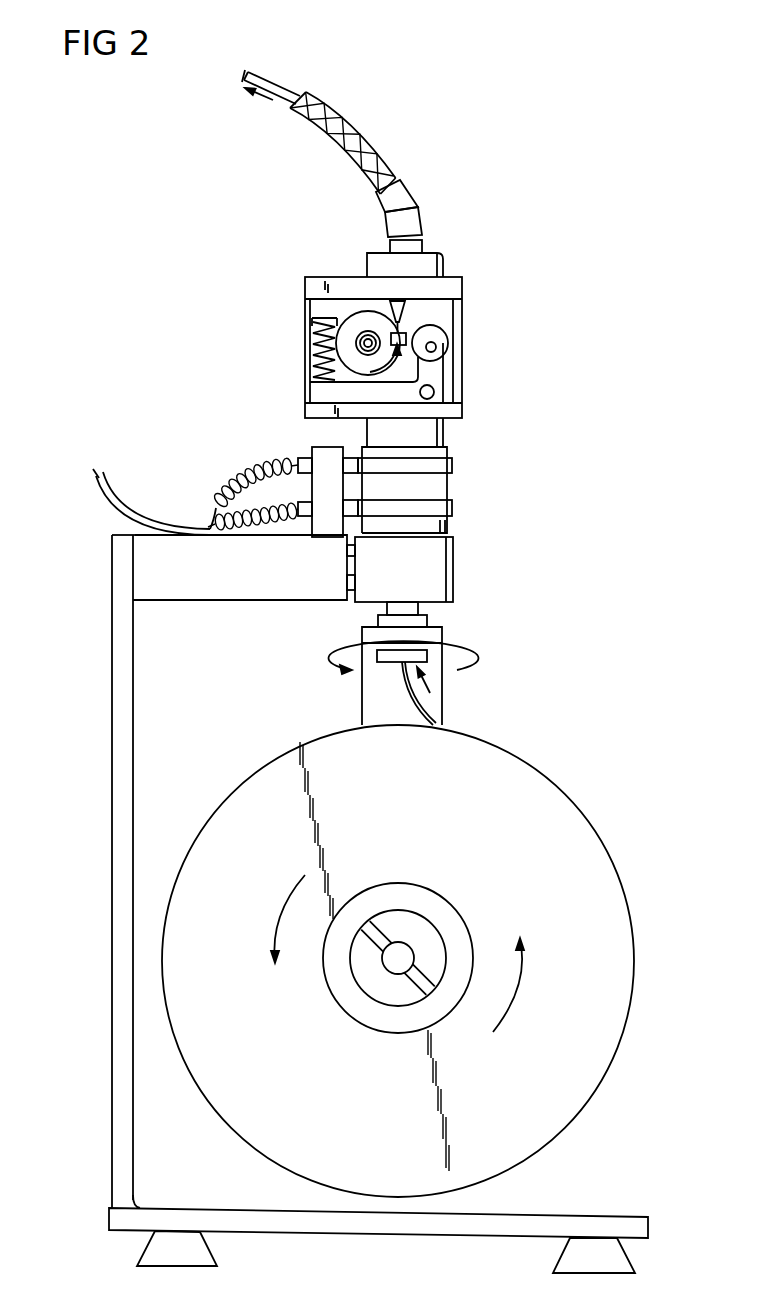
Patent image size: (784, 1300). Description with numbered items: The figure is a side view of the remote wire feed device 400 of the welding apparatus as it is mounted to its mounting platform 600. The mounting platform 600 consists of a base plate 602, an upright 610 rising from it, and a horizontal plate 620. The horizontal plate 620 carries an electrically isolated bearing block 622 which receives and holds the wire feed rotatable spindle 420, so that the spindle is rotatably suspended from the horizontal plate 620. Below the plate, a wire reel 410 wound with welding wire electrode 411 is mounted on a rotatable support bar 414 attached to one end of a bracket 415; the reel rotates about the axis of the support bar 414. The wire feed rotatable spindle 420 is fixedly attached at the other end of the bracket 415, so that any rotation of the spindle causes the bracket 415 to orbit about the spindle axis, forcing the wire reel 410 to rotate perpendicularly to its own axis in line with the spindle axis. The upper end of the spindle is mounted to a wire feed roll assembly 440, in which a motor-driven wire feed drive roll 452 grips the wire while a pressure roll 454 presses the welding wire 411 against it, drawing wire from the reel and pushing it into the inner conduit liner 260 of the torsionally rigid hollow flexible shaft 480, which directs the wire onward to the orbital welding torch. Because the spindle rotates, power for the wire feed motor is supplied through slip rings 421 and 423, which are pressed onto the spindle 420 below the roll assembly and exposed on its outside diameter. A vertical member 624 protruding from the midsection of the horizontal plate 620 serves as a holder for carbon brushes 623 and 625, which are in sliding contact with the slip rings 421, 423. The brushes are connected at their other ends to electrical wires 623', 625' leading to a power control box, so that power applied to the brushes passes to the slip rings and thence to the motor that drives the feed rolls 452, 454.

The inner conduit liner 260 is at (302, 100).
The remote wire feed device unit 400 is at (586, 494).
The wire reel 410 is at (580, 800).
The welding wire electrode 411 is at (262, 82).
The rotatable support bar 414 is at (428, 920).
The bracket 415 is at (378, 693).
The wire feed rotatable spindle 420 is at (418, 607).
The slip ring 421 is at (452, 512).
The slip ring 423 is at (452, 463).
The wire feed roll assembly 440 is at (468, 373).
The wire feed drive roll 452 is at (342, 320).
The pressure roll 454 is at (445, 325).
The torsionally rigid hollow flexible shaft 480 is at (384, 160).
The mounting platform 600 is at (106, 984).
The base plate 602 is at (400, 1232).
The upright 610 is at (120, 827).
The horizontal plate 620 is at (230, 598).
The electrically isolated bearing block 622 is at (455, 575).
The carbon brush 623 is at (291, 536).
The electrical wire 623' is at (253, 536).
The vertical member 624 is at (325, 447).
The carbon brush 625 is at (262, 468).
The electrical wire 625' is at (158, 502).